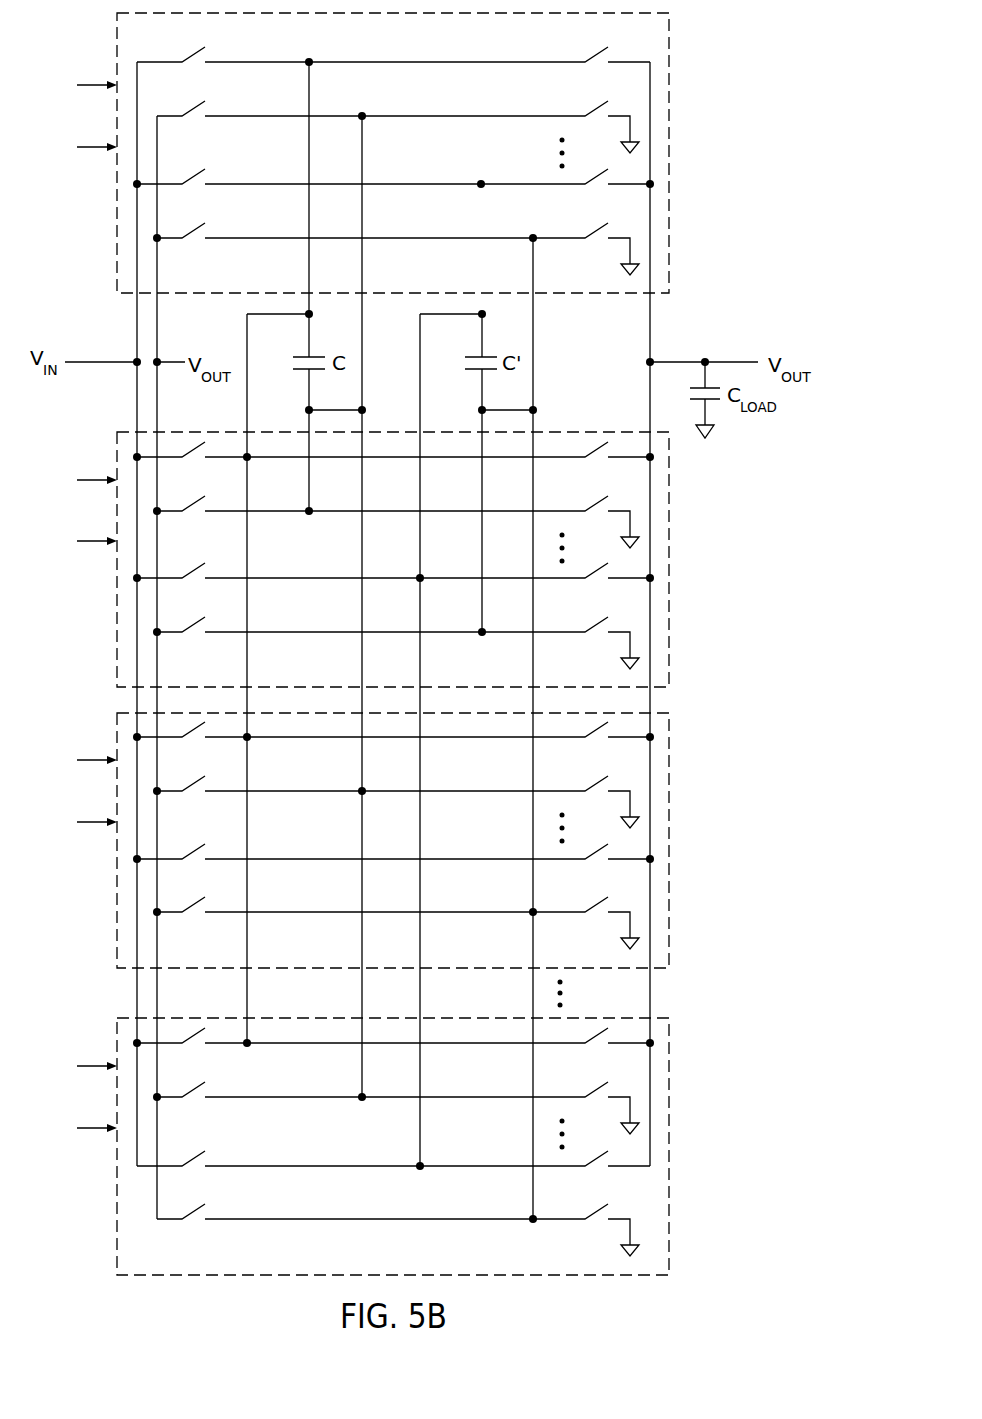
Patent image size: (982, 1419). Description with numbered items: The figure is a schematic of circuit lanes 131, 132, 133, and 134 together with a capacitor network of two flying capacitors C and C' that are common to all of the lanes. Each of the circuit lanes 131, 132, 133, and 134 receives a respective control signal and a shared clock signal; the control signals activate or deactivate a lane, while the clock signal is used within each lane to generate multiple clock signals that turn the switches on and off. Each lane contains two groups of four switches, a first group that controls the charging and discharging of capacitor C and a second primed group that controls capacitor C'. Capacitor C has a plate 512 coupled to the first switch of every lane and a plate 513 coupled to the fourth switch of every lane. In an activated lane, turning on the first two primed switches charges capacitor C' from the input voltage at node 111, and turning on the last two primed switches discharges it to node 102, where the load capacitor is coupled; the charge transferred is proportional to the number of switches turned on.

The circuit lane 131 is at (669, 153).
The circuit lane 132 is at (669, 561).
The circuit lane 133 is at (669, 841).
The circuit lane 134 is at (669, 1148).
The input node 111 is at (105, 358).
The output node 102 is at (675, 358).
The plate 512 is at (315, 353).
The plate 513 is at (303, 372).